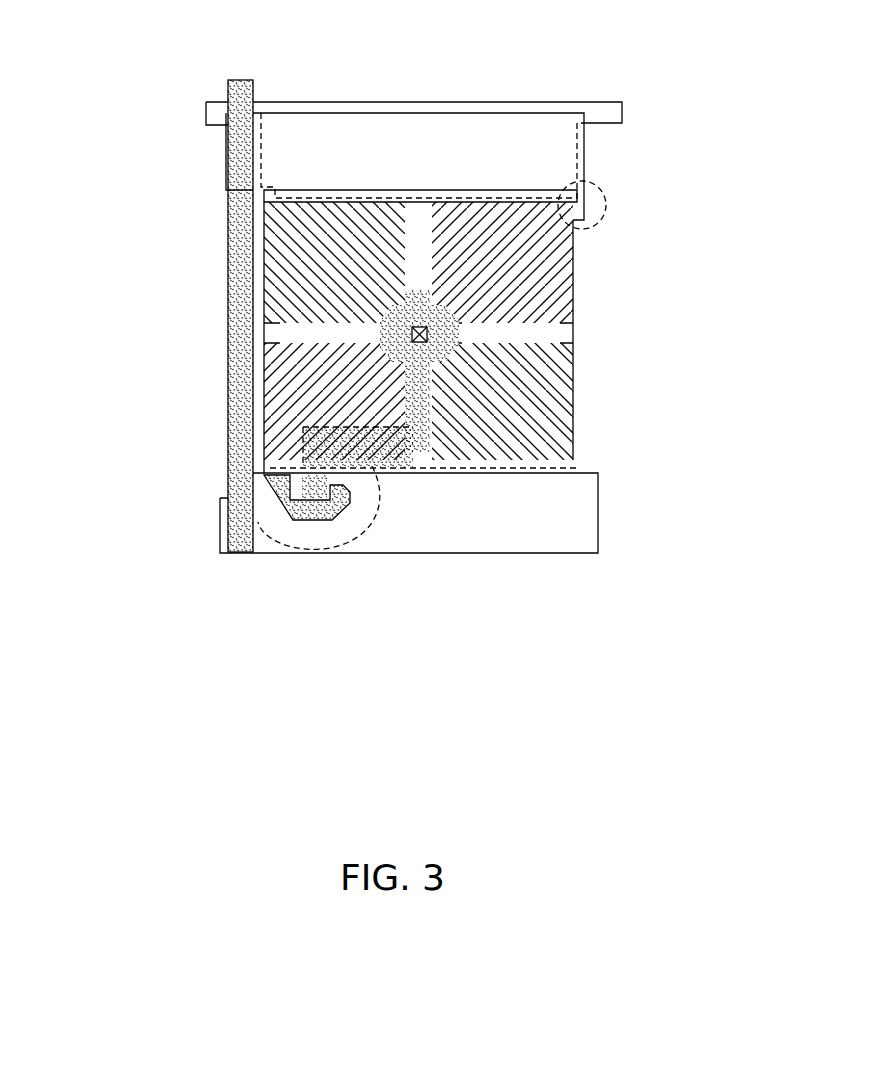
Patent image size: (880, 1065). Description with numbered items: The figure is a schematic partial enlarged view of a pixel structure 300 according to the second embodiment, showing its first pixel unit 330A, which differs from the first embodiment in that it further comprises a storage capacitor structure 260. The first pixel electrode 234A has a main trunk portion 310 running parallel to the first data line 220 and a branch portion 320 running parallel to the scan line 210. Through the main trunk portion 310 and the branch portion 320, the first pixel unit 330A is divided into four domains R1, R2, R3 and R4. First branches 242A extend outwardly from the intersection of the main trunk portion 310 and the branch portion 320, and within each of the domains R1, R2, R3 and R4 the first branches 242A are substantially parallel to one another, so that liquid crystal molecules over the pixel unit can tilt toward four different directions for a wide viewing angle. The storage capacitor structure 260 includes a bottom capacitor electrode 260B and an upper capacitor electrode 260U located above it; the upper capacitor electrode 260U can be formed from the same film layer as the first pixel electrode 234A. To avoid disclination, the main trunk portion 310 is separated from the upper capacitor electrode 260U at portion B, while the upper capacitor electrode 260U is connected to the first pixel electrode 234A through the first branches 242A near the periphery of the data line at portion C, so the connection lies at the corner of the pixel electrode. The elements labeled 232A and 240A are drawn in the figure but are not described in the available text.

The first data line 220 is at (245, 80).
The storage capacitor structure 260 is at (258, 160).
The bottom capacitor electrode 260B is at (560, 146).
The upper capacitor electrode 260U is at (598, 190).
The first branches 242A is at (474, 331).
The insulating layer 240A is at (580, 465).
The main trunk portion 310 is at (418, 289).
The branch portion 320 is at (565, 335).
The active device 232A is at (288, 450).
The first pixel electrode 234A is at (262, 259).
The first pixel unit 330A is at (110, 240).
The scan line 210 is at (378, 538).
The pixel structure 300 is at (683, 636).
The domain R1 is at (335, 278).
The domain R2 is at (493, 274).
The domain R3 is at (333, 385).
The domain R4 is at (507, 403).
The portion B is at (419, 182).
The portion C is at (277, 196).